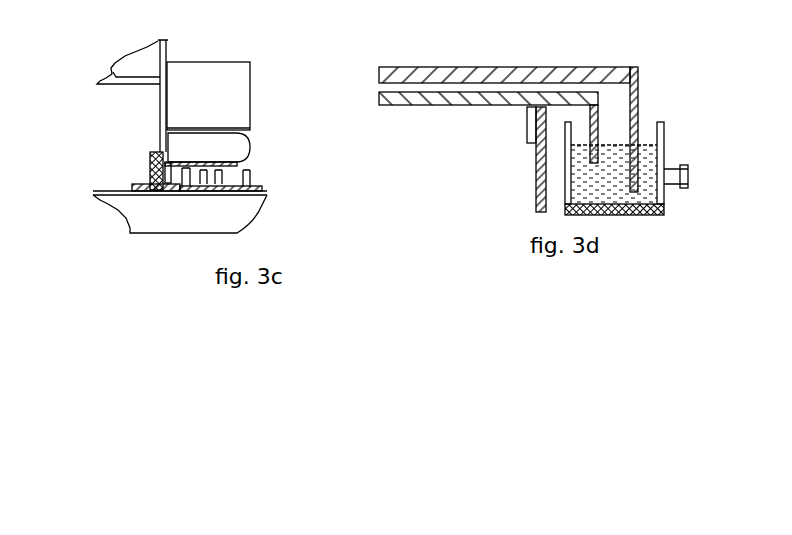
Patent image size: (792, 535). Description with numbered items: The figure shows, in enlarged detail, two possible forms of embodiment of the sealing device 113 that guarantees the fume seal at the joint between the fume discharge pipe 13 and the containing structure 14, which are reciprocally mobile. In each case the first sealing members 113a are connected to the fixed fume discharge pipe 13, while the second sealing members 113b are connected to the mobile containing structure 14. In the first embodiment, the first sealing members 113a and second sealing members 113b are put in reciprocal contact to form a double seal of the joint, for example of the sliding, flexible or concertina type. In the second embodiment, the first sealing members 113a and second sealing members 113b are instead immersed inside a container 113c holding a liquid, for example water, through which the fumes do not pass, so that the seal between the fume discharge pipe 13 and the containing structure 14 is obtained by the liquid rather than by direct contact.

In FIG. 3C, the fume discharge pipe 13 is at (237, 104).
In FIG. 3D, the fume discharge pipe 13 is at (538, 77).
In FIG. 3C, the containing structure 14 is at (236, 217).
In FIG. 3D, the containing structure 14 is at (531, 114).
In FIG. 3C, the sealing device 113 is at (97, 156).
In FIG. 3D, the sealing device 113 is at (685, 148).
In FIG. 3C, the first sealing members 113a is at (154, 152).
In FIG. 3D, the first sealing members 113a is at (635, 128).
In FIG. 3C, the second sealing members 113b is at (133, 185).
In FIG. 3D, the second sealing members 113b is at (596, 118).
In FIG. 3D, the container 113c is at (637, 212).